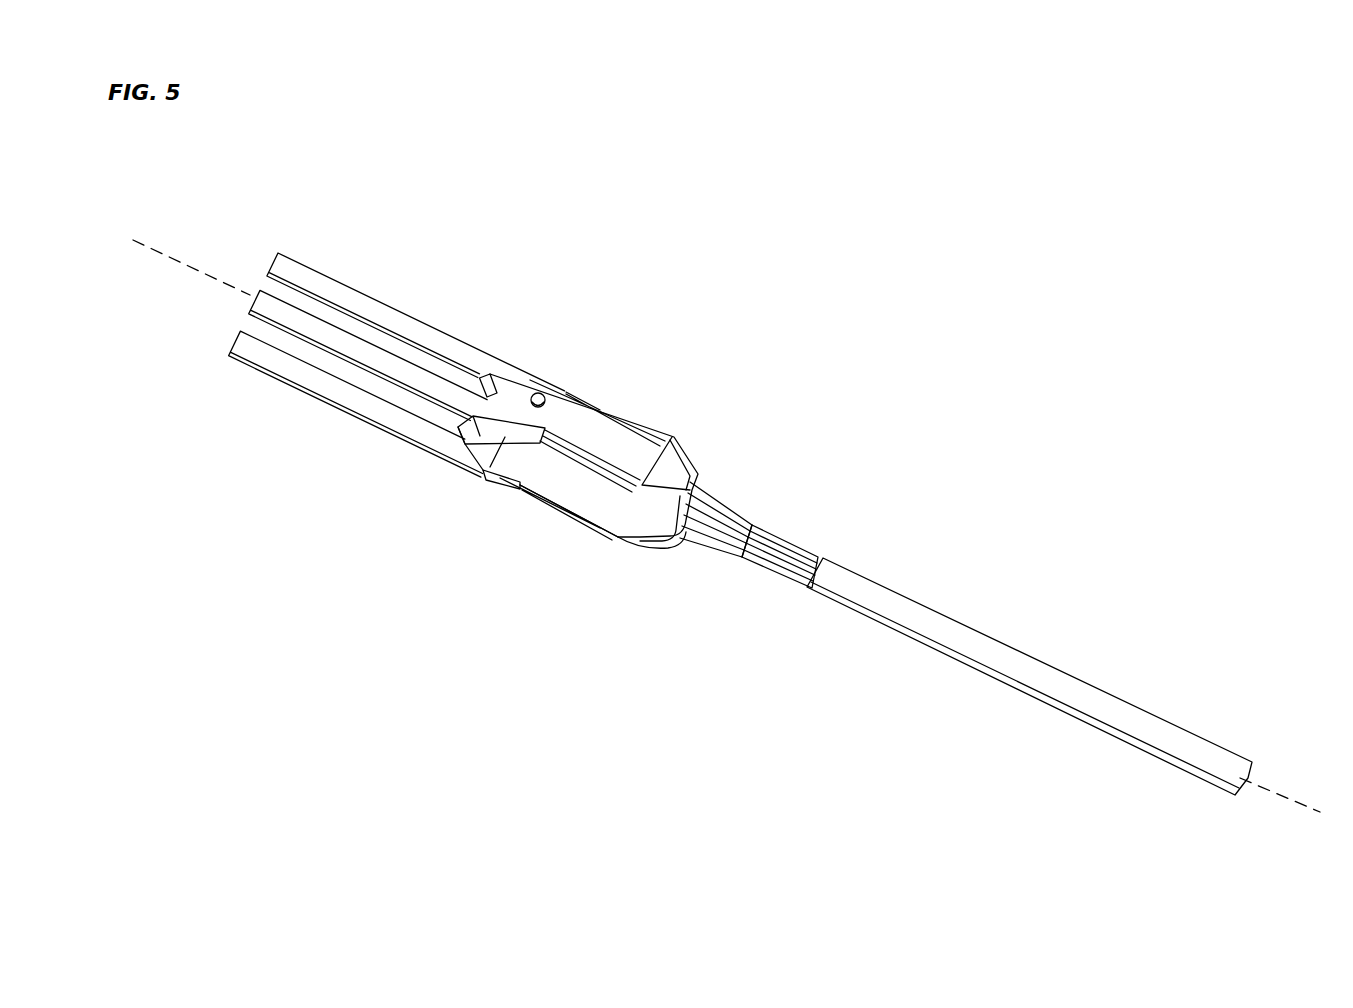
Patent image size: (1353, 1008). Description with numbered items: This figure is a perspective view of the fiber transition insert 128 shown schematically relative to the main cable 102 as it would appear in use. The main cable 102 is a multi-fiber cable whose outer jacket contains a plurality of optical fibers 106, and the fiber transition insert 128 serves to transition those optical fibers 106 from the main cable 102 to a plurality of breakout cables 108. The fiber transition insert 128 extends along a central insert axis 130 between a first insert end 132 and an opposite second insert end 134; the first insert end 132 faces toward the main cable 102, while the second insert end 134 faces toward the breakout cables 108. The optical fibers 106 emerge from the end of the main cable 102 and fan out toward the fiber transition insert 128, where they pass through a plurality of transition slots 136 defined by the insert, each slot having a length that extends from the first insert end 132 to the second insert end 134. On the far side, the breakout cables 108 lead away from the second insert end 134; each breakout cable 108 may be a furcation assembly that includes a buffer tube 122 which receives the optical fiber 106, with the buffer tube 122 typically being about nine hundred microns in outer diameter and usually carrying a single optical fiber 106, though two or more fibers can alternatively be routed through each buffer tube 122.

The main cable 102 is at (1120, 690).
The optical fibers 106 is at (784, 590).
The breakout cables 108 is at (309, 414).
The buffer tube 122 is at (728, 502).
The fiber transition insert 128 is at (634, 402).
The central insert axis 130 is at (150, 256).
The first insert end 132 is at (668, 566).
The second insert end 134 is at (461, 487).
The transition slots 136 is at (579, 388).